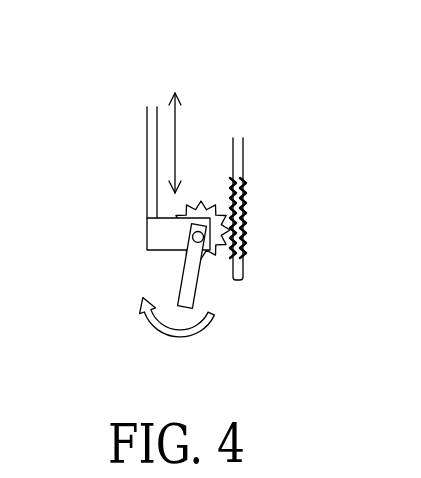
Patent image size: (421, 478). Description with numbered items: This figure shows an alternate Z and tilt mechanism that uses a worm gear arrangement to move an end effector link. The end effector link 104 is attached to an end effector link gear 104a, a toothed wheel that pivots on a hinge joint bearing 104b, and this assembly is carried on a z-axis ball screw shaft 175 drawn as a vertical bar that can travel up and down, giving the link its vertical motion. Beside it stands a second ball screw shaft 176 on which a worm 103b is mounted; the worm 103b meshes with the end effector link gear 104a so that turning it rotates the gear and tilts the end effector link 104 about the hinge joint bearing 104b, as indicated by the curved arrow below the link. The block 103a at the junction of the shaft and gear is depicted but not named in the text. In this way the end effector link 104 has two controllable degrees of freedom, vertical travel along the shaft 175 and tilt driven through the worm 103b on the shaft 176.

The z-axis ball screw shaft 175 is at (145, 147).
The ball screw shaft 176 is at (248, 155).
The end effector link 104 is at (193, 283).
The end effector link gear 104a is at (199, 199).
The hinge joint bearing 104b is at (192, 238).
The block 103a is at (165, 242).
The worm 103b is at (247, 232).